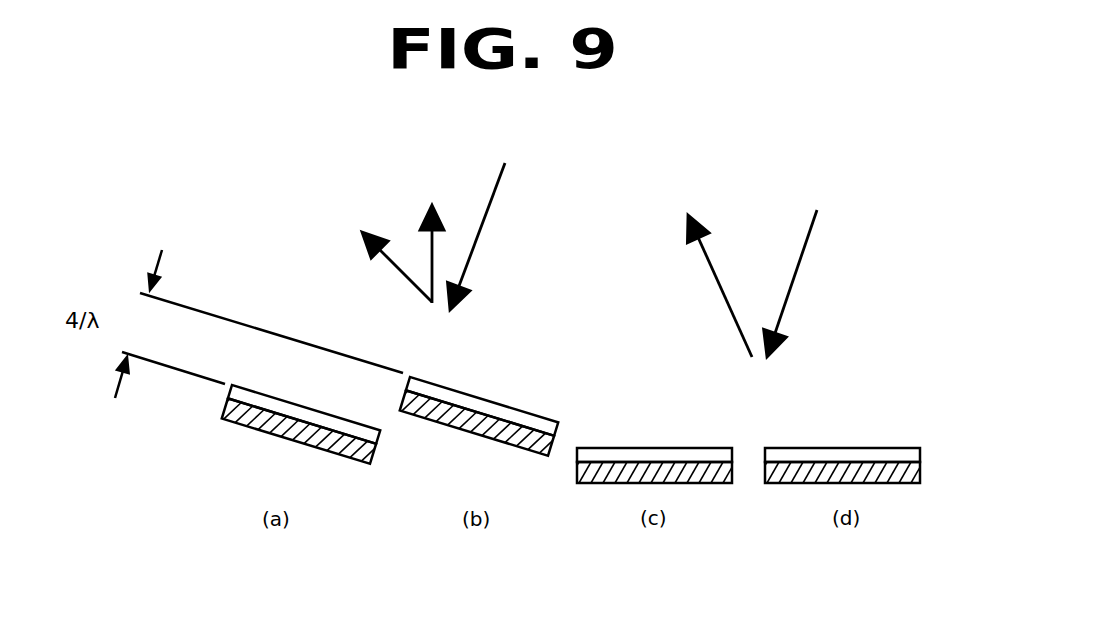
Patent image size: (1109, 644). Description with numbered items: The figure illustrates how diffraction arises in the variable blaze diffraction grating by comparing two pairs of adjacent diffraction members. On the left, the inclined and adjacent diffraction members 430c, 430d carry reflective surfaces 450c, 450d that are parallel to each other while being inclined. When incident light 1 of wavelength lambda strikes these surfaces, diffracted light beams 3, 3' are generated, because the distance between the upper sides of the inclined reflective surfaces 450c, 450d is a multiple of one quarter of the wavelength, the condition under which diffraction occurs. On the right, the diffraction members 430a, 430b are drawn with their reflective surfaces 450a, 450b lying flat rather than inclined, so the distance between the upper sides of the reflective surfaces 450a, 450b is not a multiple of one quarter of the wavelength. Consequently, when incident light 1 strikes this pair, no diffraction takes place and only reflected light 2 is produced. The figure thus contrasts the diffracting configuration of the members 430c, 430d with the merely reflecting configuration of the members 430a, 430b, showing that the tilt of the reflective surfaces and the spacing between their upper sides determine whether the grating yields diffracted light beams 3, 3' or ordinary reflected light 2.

The incident light 1 is at (638, 245).
The reflected light 2 is at (715, 270).
The diffracted light beam 3 is at (387, 254).
The diffracted light beam 3' is at (432, 240).
The diffraction member 430a is at (905, 485).
The diffraction member 430b is at (697, 485).
The diffraction member 430c is at (533, 457).
The diffraction member 430d is at (337, 460).
The reflective surface 450a is at (788, 458).
The reflective surface 450b is at (595, 458).
The reflective surface 450c is at (437, 393).
The reflective surface 450d is at (242, 398).